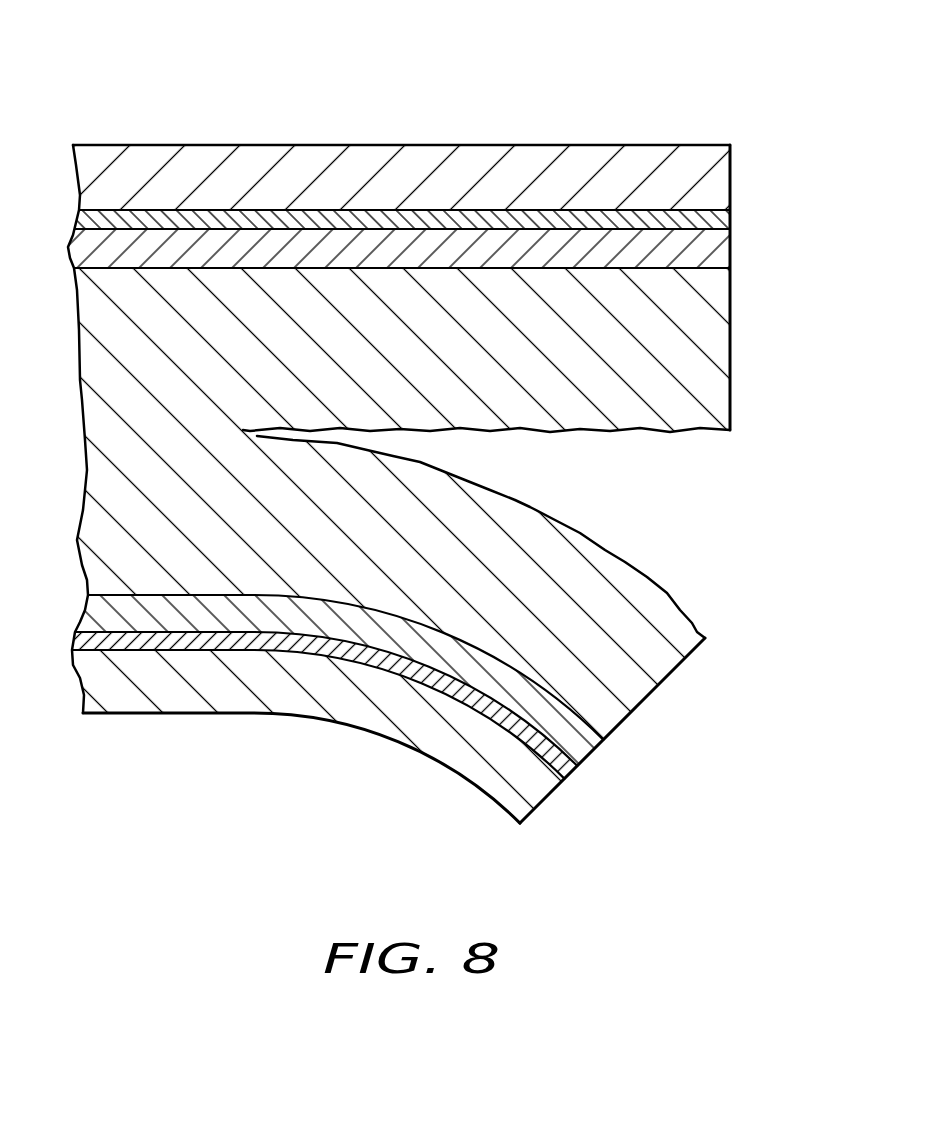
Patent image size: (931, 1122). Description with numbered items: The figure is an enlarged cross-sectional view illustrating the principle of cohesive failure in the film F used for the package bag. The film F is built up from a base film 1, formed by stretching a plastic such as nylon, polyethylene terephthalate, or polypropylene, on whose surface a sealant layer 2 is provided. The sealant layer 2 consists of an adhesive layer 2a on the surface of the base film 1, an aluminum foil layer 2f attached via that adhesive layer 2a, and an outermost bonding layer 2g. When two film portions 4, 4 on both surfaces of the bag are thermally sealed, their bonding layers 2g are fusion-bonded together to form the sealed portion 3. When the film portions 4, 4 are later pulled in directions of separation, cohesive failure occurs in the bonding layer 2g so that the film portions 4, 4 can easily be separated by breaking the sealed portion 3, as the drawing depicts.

The base film 1 is at (720, 175).
The sealant layer 2 is at (720, 350).
The adhesive layer 2a is at (720, 218).
The aluminum foil layer 2f is at (720, 248).
The bonding layer 2g is at (720, 322).
The sealed portion 3 is at (370, 96).
The film portion 4 is at (466, 145).
The film F is at (717, 508).